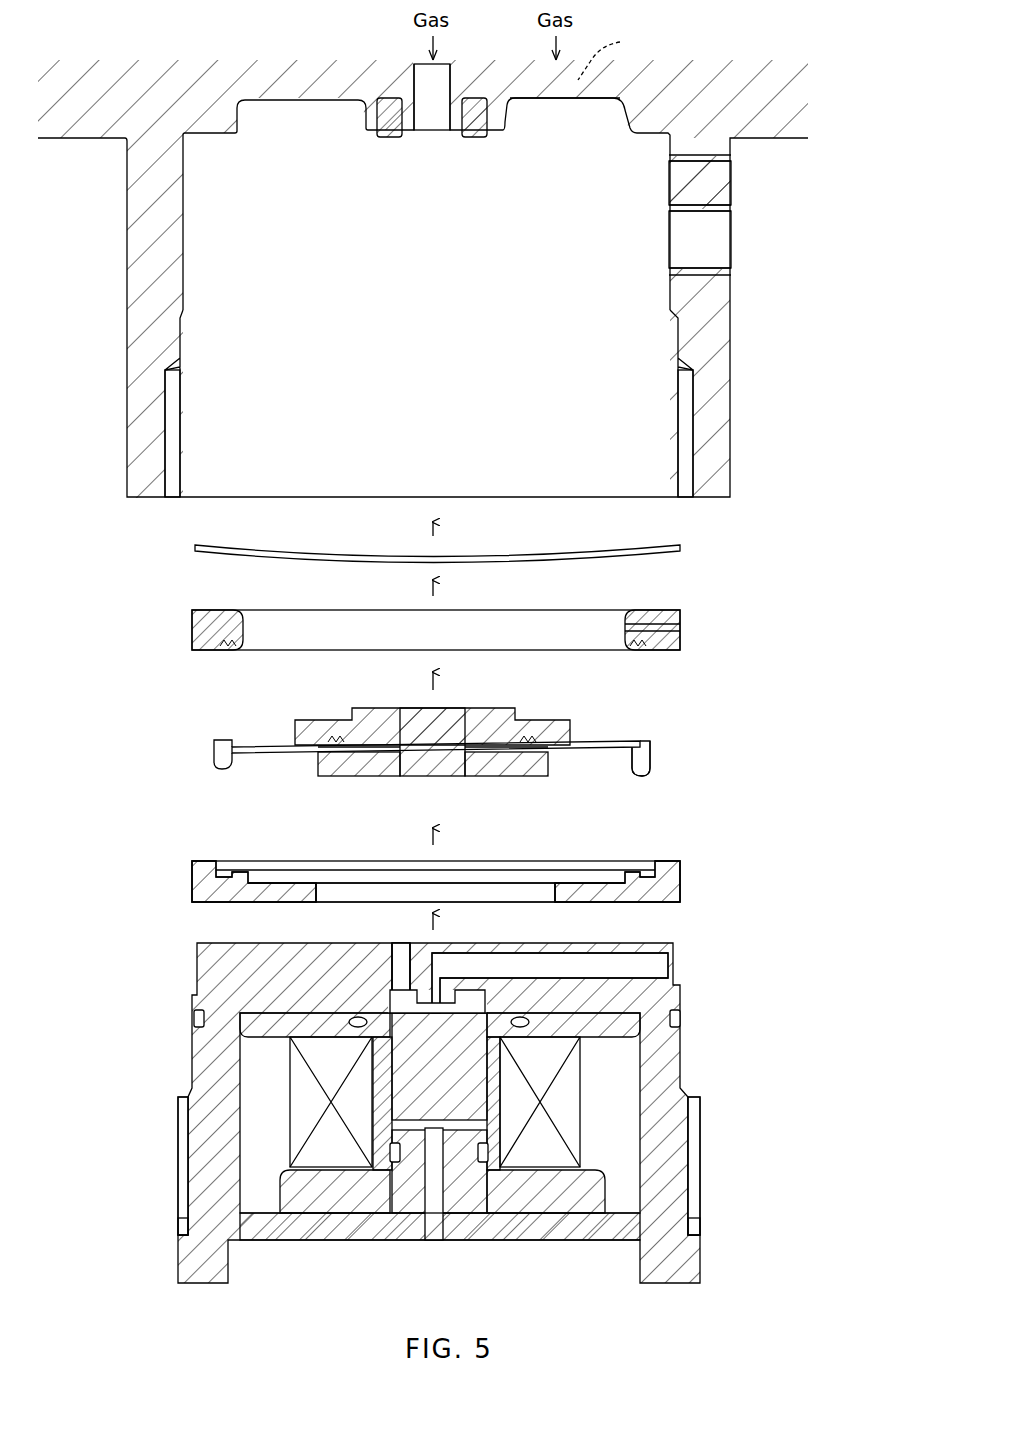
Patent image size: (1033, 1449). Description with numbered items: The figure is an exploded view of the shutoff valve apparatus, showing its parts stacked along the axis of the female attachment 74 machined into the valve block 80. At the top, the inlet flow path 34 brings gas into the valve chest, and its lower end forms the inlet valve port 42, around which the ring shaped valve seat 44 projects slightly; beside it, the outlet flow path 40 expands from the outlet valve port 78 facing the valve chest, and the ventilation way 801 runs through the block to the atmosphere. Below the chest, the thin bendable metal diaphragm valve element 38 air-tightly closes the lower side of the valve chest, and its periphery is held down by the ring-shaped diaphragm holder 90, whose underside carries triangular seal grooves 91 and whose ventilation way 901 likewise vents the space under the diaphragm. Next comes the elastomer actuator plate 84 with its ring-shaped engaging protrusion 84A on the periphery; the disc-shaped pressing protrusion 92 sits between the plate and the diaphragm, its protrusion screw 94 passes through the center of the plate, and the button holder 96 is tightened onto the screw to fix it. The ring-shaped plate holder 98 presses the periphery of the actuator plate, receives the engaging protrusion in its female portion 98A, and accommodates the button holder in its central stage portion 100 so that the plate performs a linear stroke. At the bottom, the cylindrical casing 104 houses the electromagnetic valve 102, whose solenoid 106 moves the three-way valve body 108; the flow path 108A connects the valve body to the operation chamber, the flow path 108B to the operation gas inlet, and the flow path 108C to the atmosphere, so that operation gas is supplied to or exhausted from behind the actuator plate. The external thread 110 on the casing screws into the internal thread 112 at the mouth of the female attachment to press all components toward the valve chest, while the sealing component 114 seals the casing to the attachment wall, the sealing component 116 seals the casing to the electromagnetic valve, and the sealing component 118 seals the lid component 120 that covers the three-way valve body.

The inlet flow path 34 is at (422, 80).
The outlet flow path 40 is at (614, 54).
The inlet valve port 42 is at (434, 135).
The ring shaped valve seat 44 is at (395, 138).
The female attachment 74 is at (458, 350).
The outlet valve port 78 is at (556, 112).
The valve block 80 is at (760, 128).
The ventilation way 801 is at (718, 188).
The internal thread 112 is at (687, 428).
The diaphragm valve element 38 is at (665, 546).
The diaphragm holder 90 is at (680, 612).
The ventilation way 901 is at (680, 650).
The grooves 91 is at (226, 650).
The pressing protrusion 92 is at (532, 720).
The actuator plate 84 is at (615, 742).
The engaging protrusion 84A is at (652, 779).
The protrusion screw 94 is at (425, 770).
The button holder 96 is at (549, 766).
The plate holder 98 is at (665, 888).
The female portion 98A is at (680, 870).
The stage portion for a guide 100 is at (552, 890).
The casing 104 is at (672, 1072).
The flow path 108A is at (400, 945).
The flow path 108B is at (665, 968).
The flow path 108C is at (425, 1235).
The three-way valve body 108 is at (405, 1100).
The external thread 110 is at (695, 1165).
The sealing component 114 is at (683, 1018).
The sealing component 116 is at (522, 1024).
The sealing component 118 is at (370, 1145).
The electromagnetic valve 102 is at (584, 1084).
The solenoid 106 is at (560, 1158).
The lid component 120 is at (322, 1234).